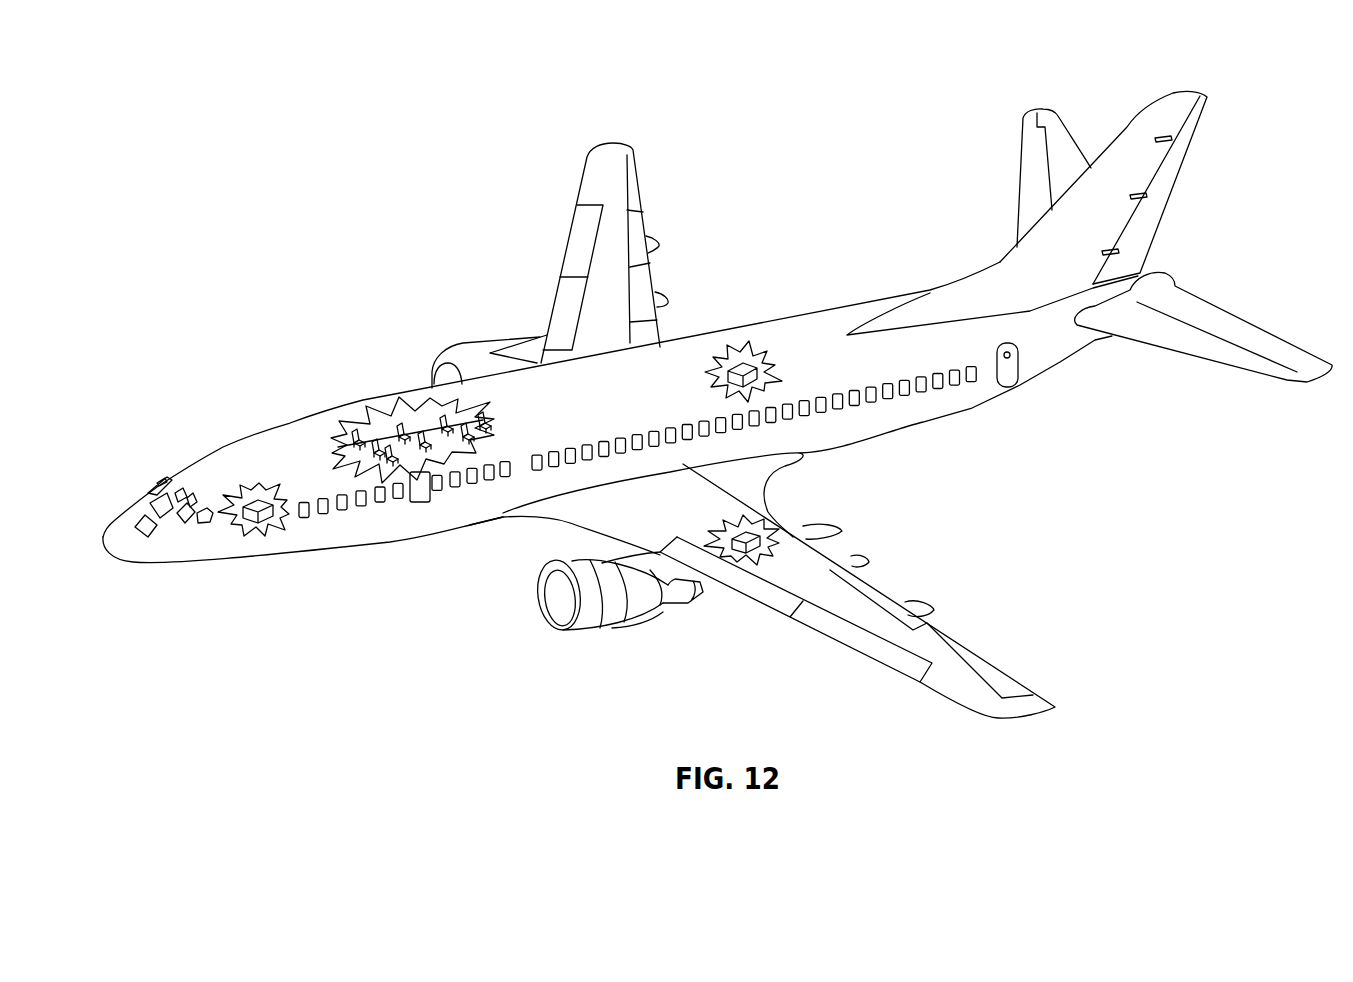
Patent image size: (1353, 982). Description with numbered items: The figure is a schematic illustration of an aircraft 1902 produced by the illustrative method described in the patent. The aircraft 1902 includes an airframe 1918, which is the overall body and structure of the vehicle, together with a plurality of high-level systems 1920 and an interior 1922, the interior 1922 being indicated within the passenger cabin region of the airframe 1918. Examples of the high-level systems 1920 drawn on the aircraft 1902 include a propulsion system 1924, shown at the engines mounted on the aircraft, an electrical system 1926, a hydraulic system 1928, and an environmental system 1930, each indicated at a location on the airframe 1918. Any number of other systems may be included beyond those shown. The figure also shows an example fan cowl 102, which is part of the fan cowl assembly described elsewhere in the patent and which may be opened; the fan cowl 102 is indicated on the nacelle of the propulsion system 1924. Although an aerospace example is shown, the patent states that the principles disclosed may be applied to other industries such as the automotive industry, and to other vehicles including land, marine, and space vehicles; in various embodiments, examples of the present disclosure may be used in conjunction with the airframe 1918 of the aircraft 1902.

The aircraft 1902 is at (218, 288).
The airframe 1918 is at (362, 399).
The high-level systems 1920 is at (1083, 534).
The interior 1922 is at (397, 478).
The propulsion system 1924 is at (473, 355).
The electrical system 1926 is at (258, 501).
The hydraulic system 1928 is at (748, 528).
The environmental system 1930 is at (739, 371).
The fan cowl 102 is at (655, 624).